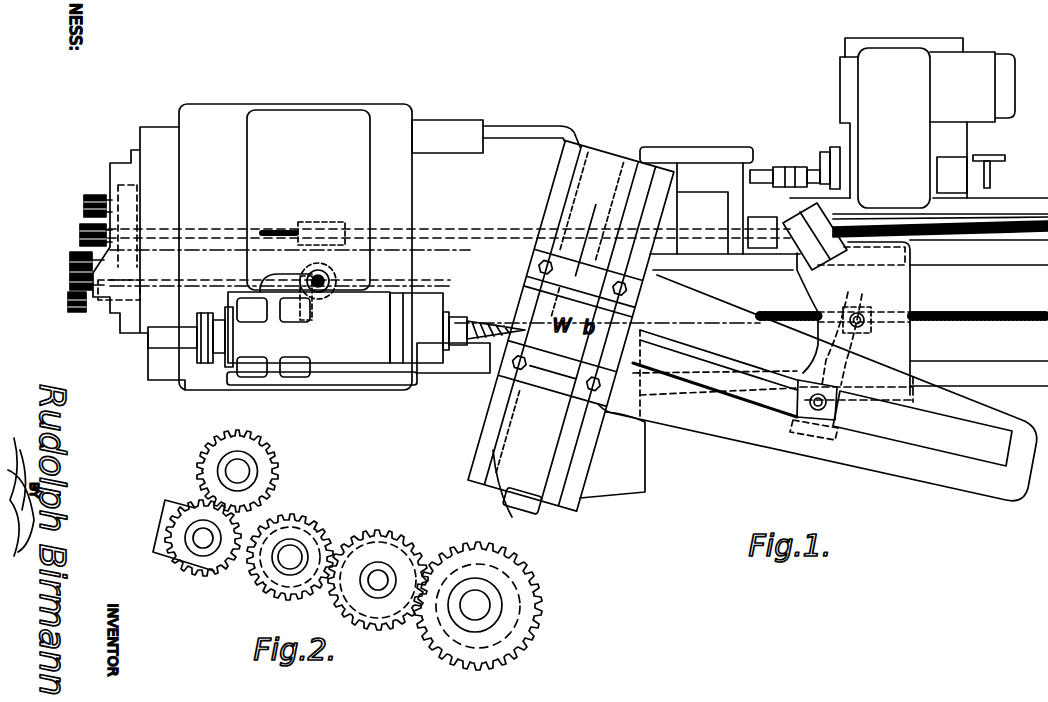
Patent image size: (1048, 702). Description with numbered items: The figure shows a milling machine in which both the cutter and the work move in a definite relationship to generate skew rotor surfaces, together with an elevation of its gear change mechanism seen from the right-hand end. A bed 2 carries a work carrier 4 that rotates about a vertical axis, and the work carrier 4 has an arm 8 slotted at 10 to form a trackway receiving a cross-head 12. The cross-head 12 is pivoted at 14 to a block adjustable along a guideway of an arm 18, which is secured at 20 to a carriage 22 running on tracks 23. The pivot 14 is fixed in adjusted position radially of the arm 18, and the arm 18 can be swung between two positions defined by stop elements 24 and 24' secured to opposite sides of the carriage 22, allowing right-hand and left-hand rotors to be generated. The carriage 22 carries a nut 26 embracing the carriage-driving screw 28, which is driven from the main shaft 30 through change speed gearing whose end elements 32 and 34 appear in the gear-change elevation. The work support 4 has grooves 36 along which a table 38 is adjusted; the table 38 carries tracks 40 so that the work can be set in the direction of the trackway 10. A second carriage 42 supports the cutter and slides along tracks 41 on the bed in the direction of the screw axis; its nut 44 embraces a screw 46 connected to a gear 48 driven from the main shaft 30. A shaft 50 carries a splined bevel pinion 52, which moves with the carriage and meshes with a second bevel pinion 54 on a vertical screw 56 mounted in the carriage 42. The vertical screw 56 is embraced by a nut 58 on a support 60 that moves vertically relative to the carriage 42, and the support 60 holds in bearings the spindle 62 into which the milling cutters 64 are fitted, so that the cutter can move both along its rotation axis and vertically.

In FIG. 1, the bed 2 is at (548, 128).
In FIG. 1, the work carrier 4 is at (528, 456).
In FIG. 1, the arm 8 is at (890, 470).
In FIG. 1, the slot 10 is at (940, 426).
In FIG. 1, the cross-head 12 is at (795, 414).
In FIG. 1, the pivot 14 is at (821, 411).
In FIG. 1, the arm 18 is at (853, 343).
In FIG. 1, the securing point 20 is at (836, 350).
In FIG. 1, the carriage 22 is at (905, 296).
In FIG. 1, the tracks 23 is at (1007, 262).
In FIG. 1, the stop element 24 is at (760, 385).
In FIG. 1, the stop element 24' is at (803, 230).
In FIG. 1, the nut 26 is at (853, 311).
In FIG. 1, the carriage-driving screw 28 is at (970, 312).
In FIG. 2, the carriage-driving screw 28 is at (243, 474).
In FIG. 1, the main shaft 30 is at (1018, 222).
In FIG. 2, the main shaft 30 is at (486, 605).
In FIG. 2, the end element of change speed gearing 32 is at (450, 542).
In FIG. 2, the end element of change speed gearing 34 is at (262, 440).
In FIG. 1, the grooves 36 is at (548, 497).
In FIG. 1, the table 38 is at (638, 298).
In FIG. 1, the tracks 40 is at (612, 367).
In FIG. 1, the tracks 41 is at (456, 122).
In FIG. 1, the carriage 42 is at (293, 194).
In FIG. 1, the nut 44 is at (318, 228).
In FIG. 1, the screw 46 is at (222, 228).
In FIG. 1, the gear 48 is at (78, 308).
In FIG. 1, the shaft 50 is at (195, 282).
In FIG. 1, the bevel pinion 52 is at (292, 312).
In FIG. 1, the bevel pinion 54 is at (329, 277).
In FIG. 1, the vertical screw 56 is at (328, 292).
In FIG. 1, the nut 58 is at (306, 276).
In FIG. 1, the support 60 is at (333, 357).
In FIG. 1, the spindle 62 is at (456, 314).
In FIG. 1, the milling cutters 64 is at (478, 327).